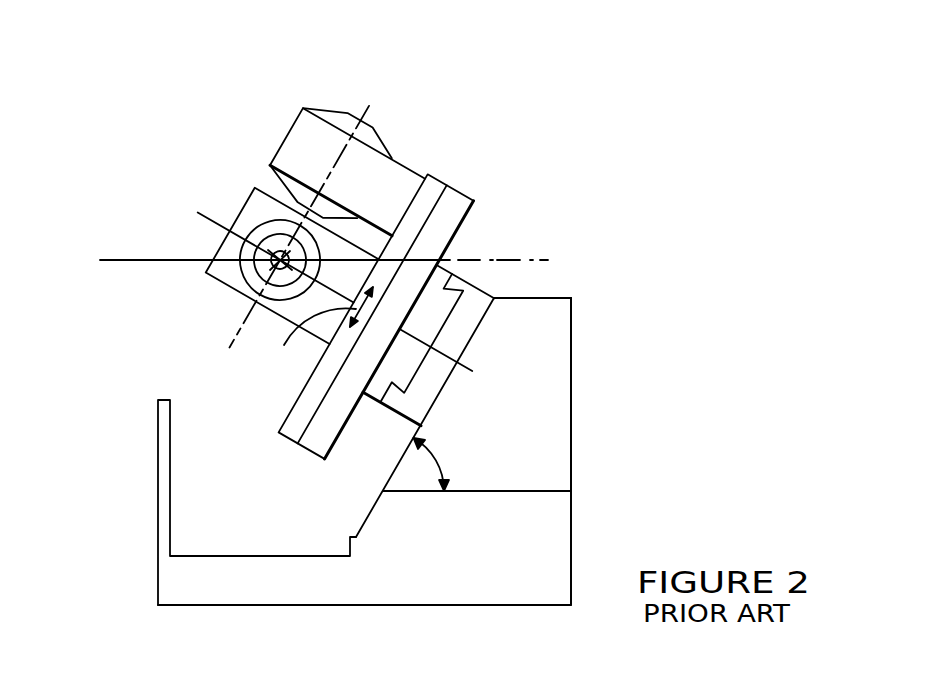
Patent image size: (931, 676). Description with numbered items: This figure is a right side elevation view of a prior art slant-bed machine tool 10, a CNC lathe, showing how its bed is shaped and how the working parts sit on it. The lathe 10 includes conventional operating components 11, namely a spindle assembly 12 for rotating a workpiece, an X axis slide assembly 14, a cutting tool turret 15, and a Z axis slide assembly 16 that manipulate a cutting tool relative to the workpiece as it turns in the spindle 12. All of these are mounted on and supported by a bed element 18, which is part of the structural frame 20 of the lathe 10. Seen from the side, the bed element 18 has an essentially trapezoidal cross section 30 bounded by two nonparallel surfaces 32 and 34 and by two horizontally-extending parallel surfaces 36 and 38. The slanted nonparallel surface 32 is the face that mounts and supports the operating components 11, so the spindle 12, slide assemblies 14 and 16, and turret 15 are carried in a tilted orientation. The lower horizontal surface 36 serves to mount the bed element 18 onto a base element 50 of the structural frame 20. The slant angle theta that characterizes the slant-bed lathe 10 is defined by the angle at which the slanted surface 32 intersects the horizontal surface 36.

The slant-bed machine tool 10 is at (448, 80).
The operating components 11 is at (150, 150).
The spindle assembly 12 is at (253, 202).
The X axis slide assembly 14 is at (448, 202).
The cutting tool turret 15 is at (313, 108).
The Z axis slide assembly 16 is at (477, 290).
The bed element 18 is at (552, 332).
The structural frame 20 is at (157, 452).
The trapezoidal cross section 30 is at (534, 425).
The nonparallel surface 32 is at (395, 463).
The nonparallel surface 34 is at (572, 392).
The horizontal surface 36 is at (402, 493).
The horizontal surface 38 is at (532, 293).
The base element 50 is at (573, 537).